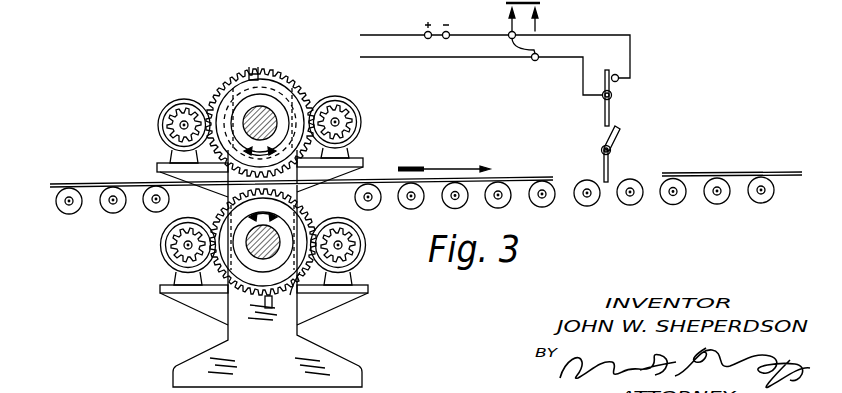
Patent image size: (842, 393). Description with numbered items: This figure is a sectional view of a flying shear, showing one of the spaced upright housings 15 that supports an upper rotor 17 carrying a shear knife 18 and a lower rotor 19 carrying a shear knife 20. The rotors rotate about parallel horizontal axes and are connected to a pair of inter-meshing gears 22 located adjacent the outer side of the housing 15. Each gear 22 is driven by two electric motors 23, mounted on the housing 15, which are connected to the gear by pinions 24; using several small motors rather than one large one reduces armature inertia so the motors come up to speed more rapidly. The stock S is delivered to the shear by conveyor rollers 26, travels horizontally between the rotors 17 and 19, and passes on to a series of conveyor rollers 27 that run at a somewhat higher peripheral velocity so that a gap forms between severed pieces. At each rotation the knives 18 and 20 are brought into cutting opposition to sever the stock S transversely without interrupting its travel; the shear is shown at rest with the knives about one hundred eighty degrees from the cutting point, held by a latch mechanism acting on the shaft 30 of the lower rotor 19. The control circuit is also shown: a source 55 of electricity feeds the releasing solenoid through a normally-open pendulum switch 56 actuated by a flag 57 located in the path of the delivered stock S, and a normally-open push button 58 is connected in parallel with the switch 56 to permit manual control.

The stock S is at (93, 183).
The upright housing 15 is at (225, 342).
The upper rotor 17 is at (240, 88).
The shear knife 18 is at (262, 66).
The lower rotor 19 is at (290, 295).
The shear knife 20 is at (265, 301).
The inter-meshing gears 22 is at (214, 92).
The electric motors 23 is at (158, 113).
The pinions 24 is at (178, 127).
The conveyor rollers 26 is at (108, 212).
The conveyor rollers 27 is at (716, 204).
The shaft 30 is at (270, 259).
The source of electricity 55 is at (495, 49).
The pendulum switch 56 is at (620, 98).
The flag 57 is at (609, 170).
The push button 58 is at (532, 17).